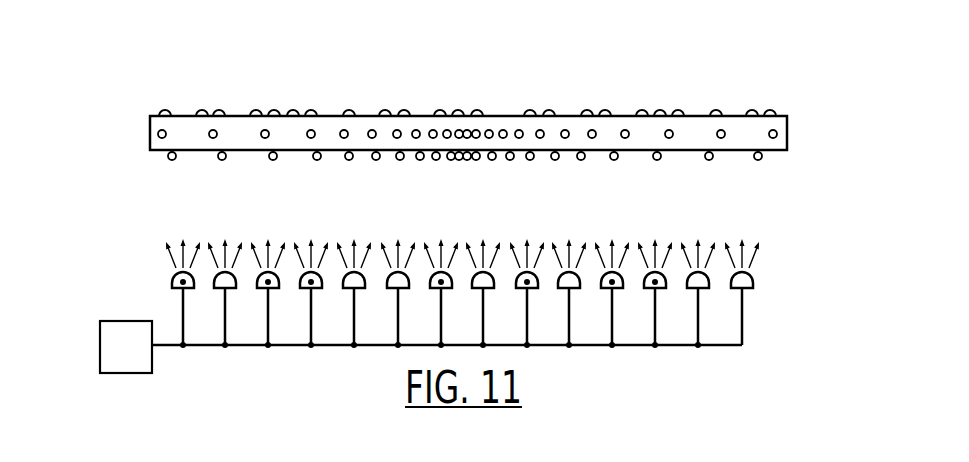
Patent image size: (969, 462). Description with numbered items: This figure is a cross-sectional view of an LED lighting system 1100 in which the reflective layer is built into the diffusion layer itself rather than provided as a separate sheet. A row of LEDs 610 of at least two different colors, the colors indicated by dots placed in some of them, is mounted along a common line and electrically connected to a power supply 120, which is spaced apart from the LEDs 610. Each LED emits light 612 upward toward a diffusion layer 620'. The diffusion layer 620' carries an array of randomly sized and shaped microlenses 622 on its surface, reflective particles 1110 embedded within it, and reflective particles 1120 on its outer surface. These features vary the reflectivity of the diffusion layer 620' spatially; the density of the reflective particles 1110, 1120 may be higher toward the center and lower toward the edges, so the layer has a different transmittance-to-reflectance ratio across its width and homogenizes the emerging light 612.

The LED lighting system 1100 is at (98, 135).
The diffusion layer 620' is at (448, 113).
The microlenses 622 is at (216, 110).
The reflective particles 1110 is at (669, 129).
The reflective particles 1120 is at (709, 161).
The LEDs 610 is at (174, 283).
The light 612 is at (170, 259).
The power supply 120 is at (144, 358).